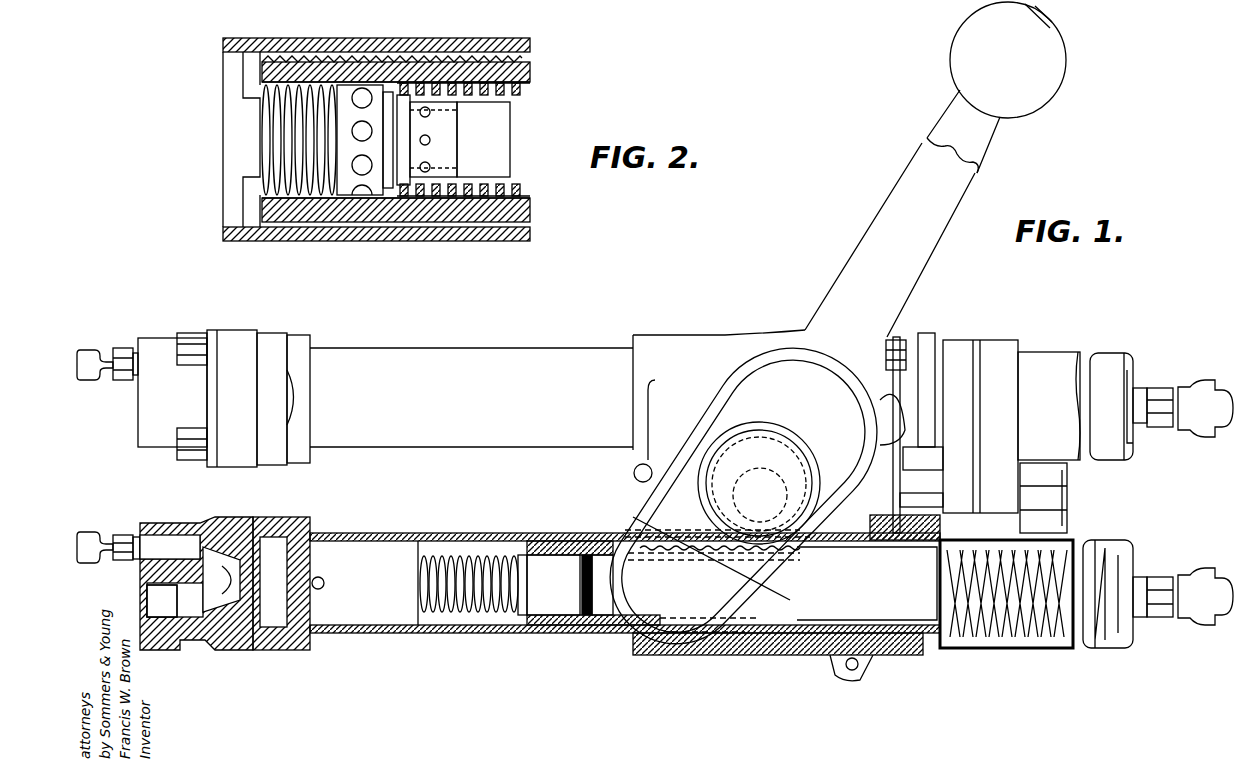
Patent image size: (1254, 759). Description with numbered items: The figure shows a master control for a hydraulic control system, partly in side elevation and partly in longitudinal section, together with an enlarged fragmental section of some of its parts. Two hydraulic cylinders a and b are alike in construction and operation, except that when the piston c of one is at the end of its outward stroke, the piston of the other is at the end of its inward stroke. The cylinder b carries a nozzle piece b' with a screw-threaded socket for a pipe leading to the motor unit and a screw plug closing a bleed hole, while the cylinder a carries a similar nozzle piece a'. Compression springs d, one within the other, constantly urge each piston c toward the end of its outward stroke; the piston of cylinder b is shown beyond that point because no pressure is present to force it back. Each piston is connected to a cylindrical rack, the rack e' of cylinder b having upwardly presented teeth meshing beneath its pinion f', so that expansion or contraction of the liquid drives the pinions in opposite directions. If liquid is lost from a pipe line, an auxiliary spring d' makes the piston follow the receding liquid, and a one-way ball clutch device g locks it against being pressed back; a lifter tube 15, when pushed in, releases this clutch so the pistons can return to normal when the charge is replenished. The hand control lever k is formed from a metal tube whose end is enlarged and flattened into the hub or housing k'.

In FIG. 1, the hydraulic cylinder a is at (471, 412).
In FIG. 1, the nozzle piece a' is at (258, 379).
In FIG. 2, the hydraulic cylinder b is at (376, 155).
In FIG. 1, the nozzle piece b' is at (196, 606).
In FIG. 1, the piston c is at (290, 620).
In FIG. 2, the compression spring d is at (463, 180).
In FIG. 1, the compression spring d is at (1007, 617).
In FIG. 2, the auxiliary spring d' is at (256, 129).
In FIG. 1, the auxiliary spring d' is at (469, 552).
In FIG. 2, the cylindrical rack e' is at (417, 127).
In FIG. 1, the cylindrical rack e' is at (593, 564).
In FIG. 1, the pinion f' is at (867, 583).
In FIG. 2, the one-way ball clutch device g is at (378, 190).
In FIG. 1, the one-way ball clutch device g is at (566, 603).
In FIG. 1, the hand control lever k is at (935, 169).
In FIG. 1, the hub or housing k' is at (743, 468).
In FIG. 2, the lifter tube 15 is at (500, 132).